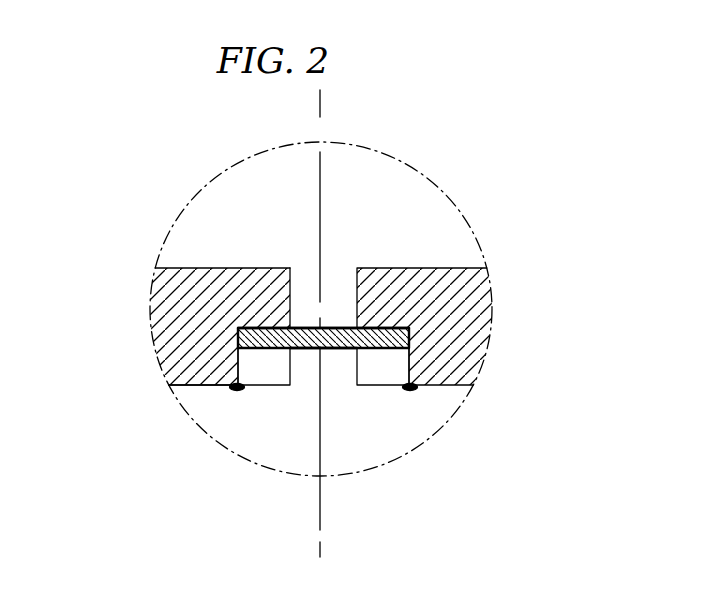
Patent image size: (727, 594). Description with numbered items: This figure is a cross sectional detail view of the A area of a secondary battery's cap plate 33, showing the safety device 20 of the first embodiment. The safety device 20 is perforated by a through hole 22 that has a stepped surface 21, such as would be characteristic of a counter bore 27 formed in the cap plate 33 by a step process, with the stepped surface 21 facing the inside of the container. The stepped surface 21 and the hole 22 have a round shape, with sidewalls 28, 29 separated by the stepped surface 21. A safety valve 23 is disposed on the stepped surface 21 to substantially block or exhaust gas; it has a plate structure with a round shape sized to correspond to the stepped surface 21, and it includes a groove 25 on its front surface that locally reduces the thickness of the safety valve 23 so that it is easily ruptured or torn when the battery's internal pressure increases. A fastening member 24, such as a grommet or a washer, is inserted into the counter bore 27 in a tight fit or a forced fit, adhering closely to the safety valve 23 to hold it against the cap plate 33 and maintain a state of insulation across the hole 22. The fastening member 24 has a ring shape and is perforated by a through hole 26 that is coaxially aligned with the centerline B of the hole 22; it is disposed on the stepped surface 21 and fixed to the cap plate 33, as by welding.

The safety device 20 is at (340, 383).
The stepped surface 21 is at (238, 328).
The through hole 22 is at (291, 303).
The safety valve 23 is at (303, 350).
The fastening member 24 is at (237, 388).
The groove 25 is at (322, 348).
The through hole 26 is at (353, 386).
The counter bore 27 is at (317, 383).
The sidewall 28 is at (355, 295).
The sidewall 29 is at (237, 386).
The cap plate 33 is at (473, 285).
The A area A is at (541, 202).
The centerline B is at (320, 105).